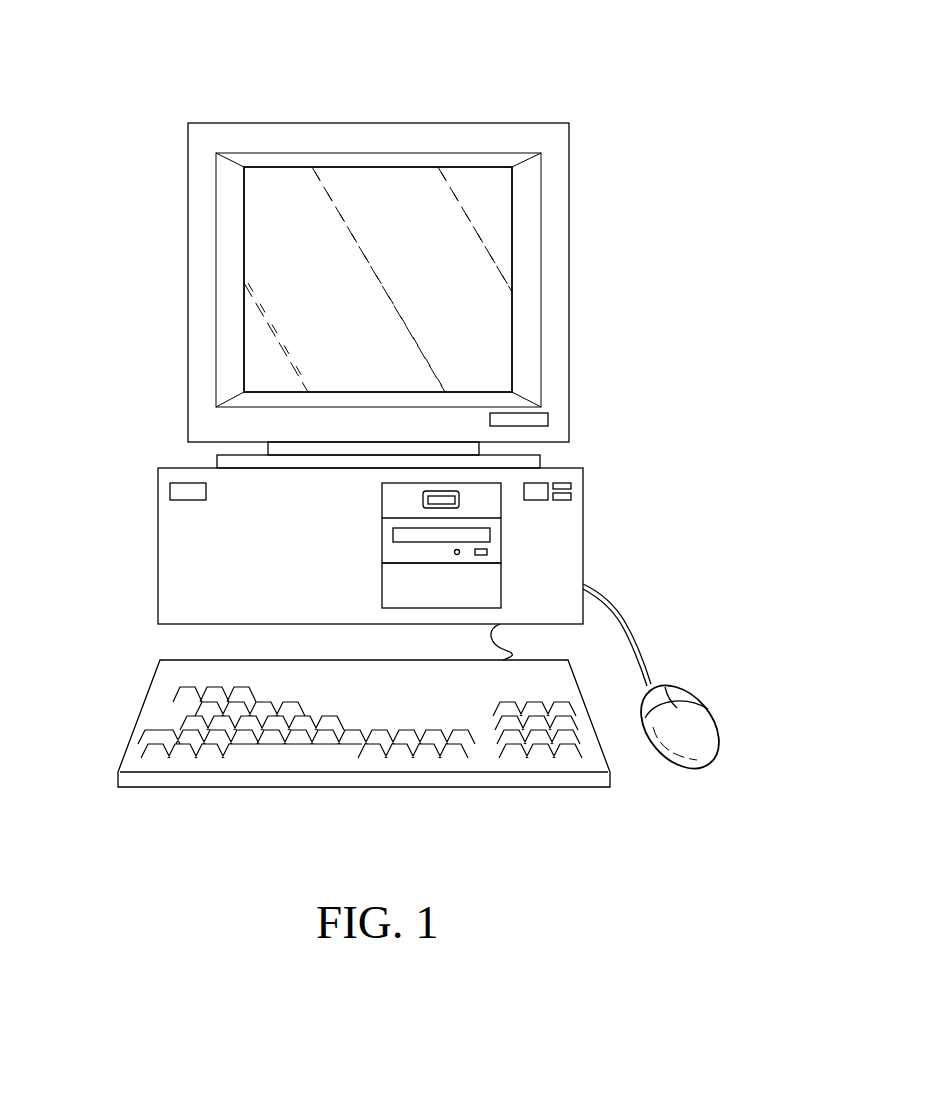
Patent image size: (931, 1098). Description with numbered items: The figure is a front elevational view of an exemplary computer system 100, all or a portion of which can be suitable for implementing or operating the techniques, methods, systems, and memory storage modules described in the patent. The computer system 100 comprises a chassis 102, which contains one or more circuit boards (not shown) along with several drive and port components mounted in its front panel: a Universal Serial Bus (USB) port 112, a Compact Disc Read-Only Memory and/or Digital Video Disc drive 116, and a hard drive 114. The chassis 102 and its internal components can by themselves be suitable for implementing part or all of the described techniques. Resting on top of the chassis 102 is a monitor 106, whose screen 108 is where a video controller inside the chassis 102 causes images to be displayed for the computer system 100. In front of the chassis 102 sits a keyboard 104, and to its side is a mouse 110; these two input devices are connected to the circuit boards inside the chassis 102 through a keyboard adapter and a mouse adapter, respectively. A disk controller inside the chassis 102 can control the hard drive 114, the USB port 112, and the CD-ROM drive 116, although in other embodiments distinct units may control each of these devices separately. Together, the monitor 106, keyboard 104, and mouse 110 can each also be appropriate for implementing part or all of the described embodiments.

The computer system 100 is at (559, 99).
The chassis 102 is at (158, 548).
The keyboard 104 is at (143, 720).
The monitor 106 is at (263, 123).
The screen 108 is at (293, 285).
The mouse 110 is at (700, 715).
The Universal Serial Bus (USB) port 112 is at (460, 497).
The hard drive 114 is at (492, 583).
The CD-ROM and/or DVD drive 116 is at (492, 541).